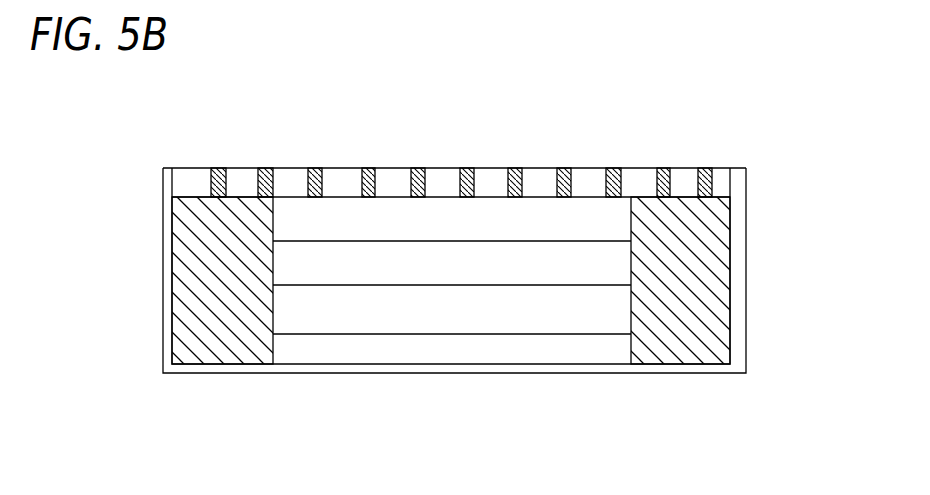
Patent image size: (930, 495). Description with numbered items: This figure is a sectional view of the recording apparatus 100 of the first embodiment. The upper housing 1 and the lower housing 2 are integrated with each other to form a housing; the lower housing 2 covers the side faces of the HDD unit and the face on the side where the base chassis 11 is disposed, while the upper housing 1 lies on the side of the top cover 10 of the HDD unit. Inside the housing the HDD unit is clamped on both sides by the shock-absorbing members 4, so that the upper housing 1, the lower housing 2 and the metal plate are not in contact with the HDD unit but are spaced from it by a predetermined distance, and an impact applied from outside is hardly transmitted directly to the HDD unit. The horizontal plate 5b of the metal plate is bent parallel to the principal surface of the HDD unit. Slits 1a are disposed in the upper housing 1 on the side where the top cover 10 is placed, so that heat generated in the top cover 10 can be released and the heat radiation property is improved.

The recording apparatus 100 is at (443, 113).
The upper housing 1 is at (493, 178).
The slits 1a is at (706, 178).
The horizontal plate 5b is at (203, 180).
The shock-absorbing members 4 is at (715, 271).
The top cover 10 is at (320, 270).
The base chassis 11 is at (390, 327).
The lower housing 2 is at (495, 372).